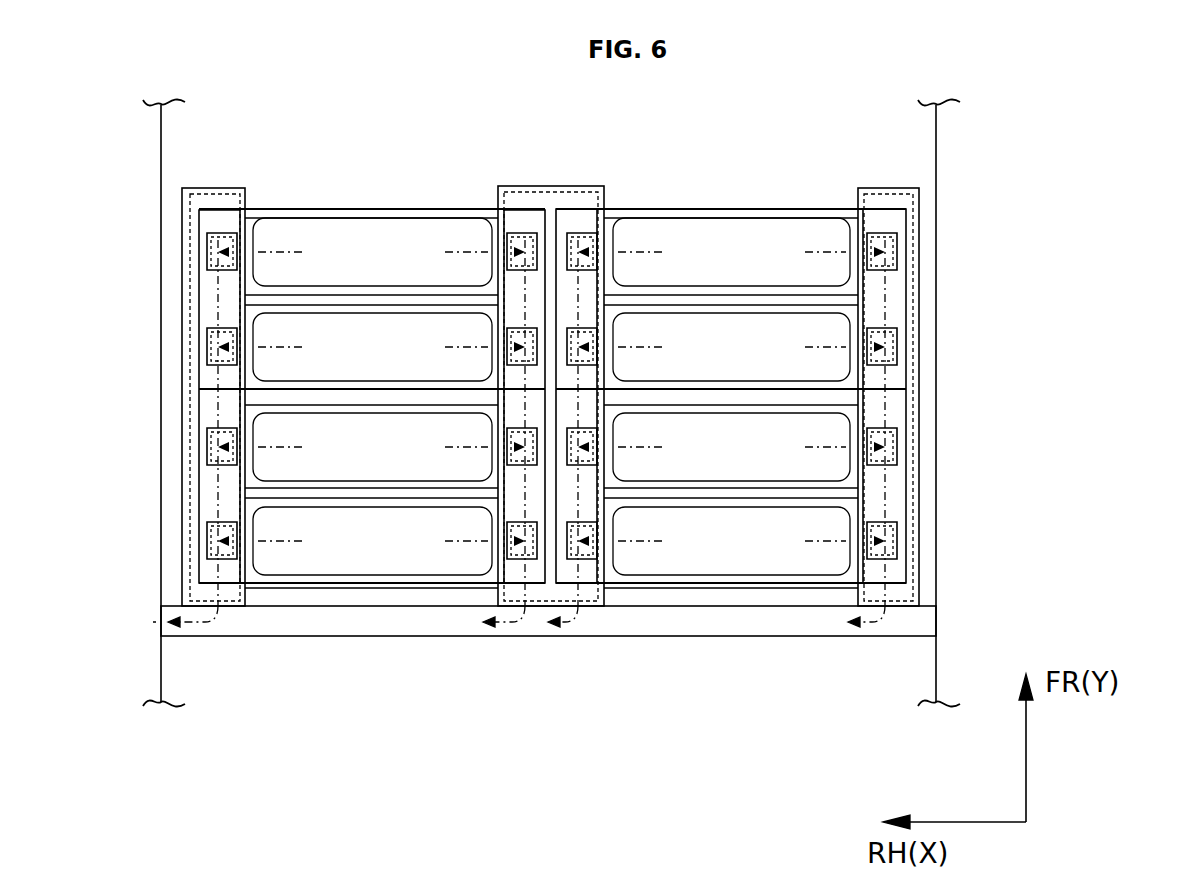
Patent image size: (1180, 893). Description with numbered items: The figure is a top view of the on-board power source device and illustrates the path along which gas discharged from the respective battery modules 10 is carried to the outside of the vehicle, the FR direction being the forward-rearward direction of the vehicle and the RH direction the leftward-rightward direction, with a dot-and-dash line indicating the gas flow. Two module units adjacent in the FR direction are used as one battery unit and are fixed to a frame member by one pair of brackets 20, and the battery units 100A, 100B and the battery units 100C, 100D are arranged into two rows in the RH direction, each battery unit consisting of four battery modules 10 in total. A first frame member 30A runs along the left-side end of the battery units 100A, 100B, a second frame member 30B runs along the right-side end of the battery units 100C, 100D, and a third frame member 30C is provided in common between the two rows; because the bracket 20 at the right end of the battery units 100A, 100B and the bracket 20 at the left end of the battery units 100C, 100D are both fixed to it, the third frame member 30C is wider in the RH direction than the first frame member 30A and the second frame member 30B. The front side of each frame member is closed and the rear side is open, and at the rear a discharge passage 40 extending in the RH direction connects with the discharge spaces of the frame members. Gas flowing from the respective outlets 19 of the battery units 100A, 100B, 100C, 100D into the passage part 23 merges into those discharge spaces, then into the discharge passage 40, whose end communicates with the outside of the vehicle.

The battery module 10 is at (773, 553).
The outlet 19 is at (250, 247).
The bracket 20 is at (200, 300).
The passage part 23 is at (207, 256).
The first frame member 30A is at (222, 180).
The second frame member 30B is at (876, 178).
The third frame member 30C is at (558, 176).
The discharge passage 40 is at (389, 643).
The battery unit 100A is at (370, 200).
The battery unit 100B is at (308, 598).
The battery unit 100C is at (720, 200).
The battery unit 100D is at (718, 598).